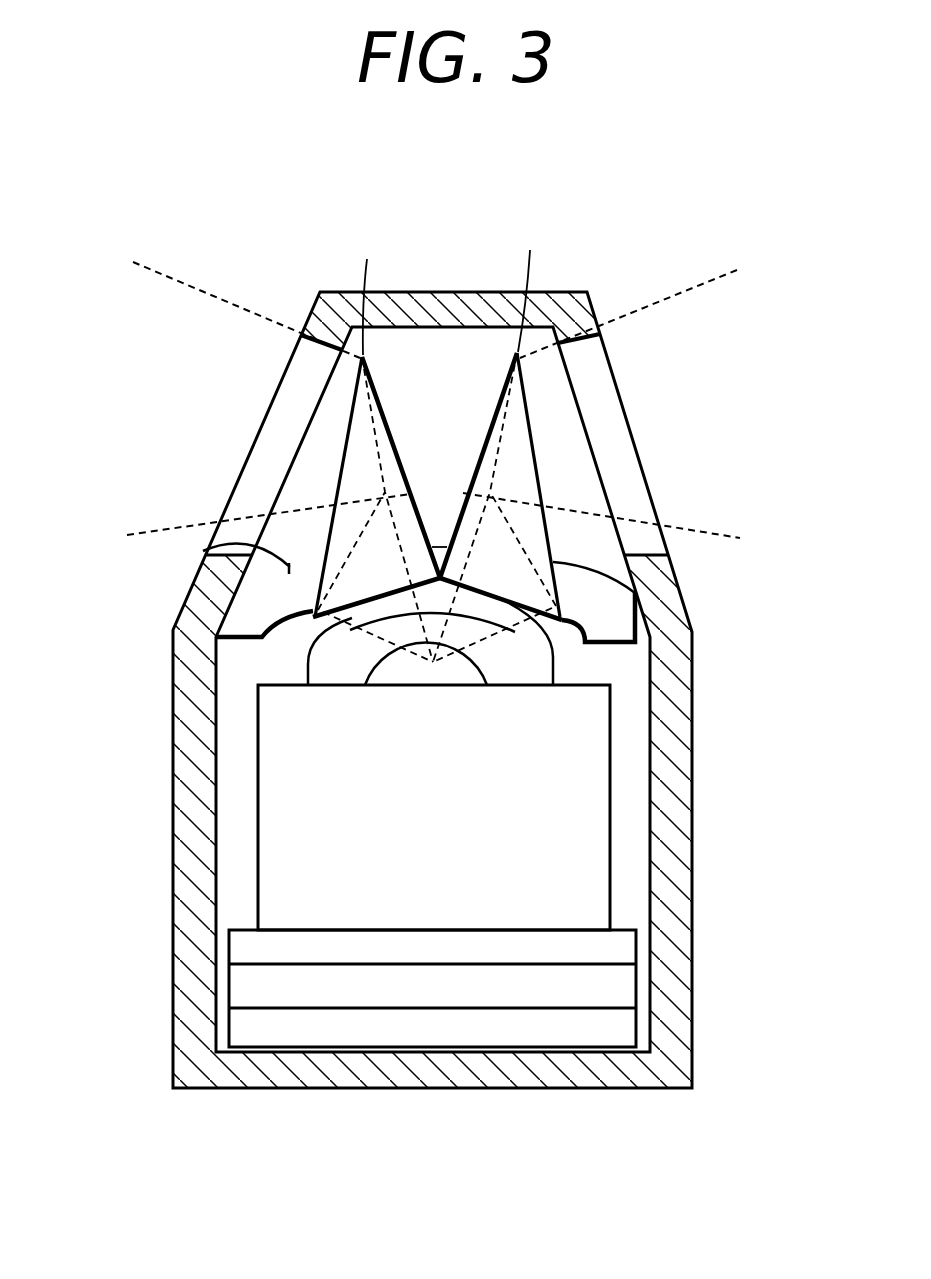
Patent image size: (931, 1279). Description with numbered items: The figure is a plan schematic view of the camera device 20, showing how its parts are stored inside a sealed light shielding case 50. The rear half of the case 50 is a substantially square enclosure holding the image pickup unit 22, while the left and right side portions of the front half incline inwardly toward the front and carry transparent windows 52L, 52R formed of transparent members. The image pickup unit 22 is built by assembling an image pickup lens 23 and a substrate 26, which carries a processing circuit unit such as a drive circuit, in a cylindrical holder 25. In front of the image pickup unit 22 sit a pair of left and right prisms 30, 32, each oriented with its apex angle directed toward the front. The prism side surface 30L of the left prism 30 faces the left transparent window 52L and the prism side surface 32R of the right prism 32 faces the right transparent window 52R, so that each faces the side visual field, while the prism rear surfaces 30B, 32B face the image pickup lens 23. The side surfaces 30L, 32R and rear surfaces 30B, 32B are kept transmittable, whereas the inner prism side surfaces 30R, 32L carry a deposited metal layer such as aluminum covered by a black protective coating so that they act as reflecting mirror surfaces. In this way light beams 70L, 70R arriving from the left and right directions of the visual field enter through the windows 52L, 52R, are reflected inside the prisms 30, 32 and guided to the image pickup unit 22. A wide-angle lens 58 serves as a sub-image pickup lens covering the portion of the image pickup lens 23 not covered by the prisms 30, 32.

The camera device 20 is at (451, 240).
The image pickup unit 22 is at (628, 747).
The image pickup lens 23 is at (547, 673).
The cylindrical holder 25 is at (593, 822).
The substrate 26 is at (623, 995).
The left prism 30 is at (345, 391).
The left prism side surface 30L is at (340, 443).
The right prism side surface of left prism 30R is at (367, 378).
The prism rear surface 30B is at (366, 612).
The right prism 32 is at (538, 398).
The left prism side surface of right prism 32L is at (490, 430).
The right prism side surface 32R is at (538, 457).
The prism rear surface 32B is at (502, 600).
The light shielding case 50 is at (180, 900).
The left transparent window 52L is at (253, 473).
The right transparent window 52R is at (628, 470).
The wide-angle lens 58 is at (203, 547).
The left light beam 70L is at (176, 281).
The right light beam 70R is at (683, 292).